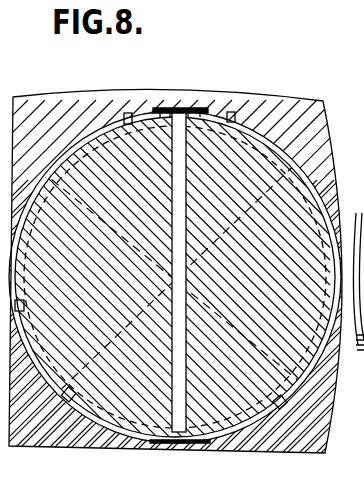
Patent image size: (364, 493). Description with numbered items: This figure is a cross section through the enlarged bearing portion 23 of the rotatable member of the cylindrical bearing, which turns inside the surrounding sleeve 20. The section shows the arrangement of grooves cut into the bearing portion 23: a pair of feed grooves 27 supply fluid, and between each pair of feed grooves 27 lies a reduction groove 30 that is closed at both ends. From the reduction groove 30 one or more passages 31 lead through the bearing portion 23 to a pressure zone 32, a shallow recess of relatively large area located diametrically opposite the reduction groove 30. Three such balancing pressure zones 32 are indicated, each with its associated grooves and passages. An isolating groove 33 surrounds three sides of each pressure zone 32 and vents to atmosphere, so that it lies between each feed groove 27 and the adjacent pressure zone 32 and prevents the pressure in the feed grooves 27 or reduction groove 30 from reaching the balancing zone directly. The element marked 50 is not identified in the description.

The sleeve 20 is at (32, 436).
The bearing portion 23 is at (258, 142).
The feed groove 27 is at (160, 107).
The reduction groove 30 is at (181, 108).
The passage 31 is at (196, 450).
The pressure zone 32 is at (79, 140).
The isolating groove 33 is at (127, 118).
The lower bar 50 is at (209, 466).